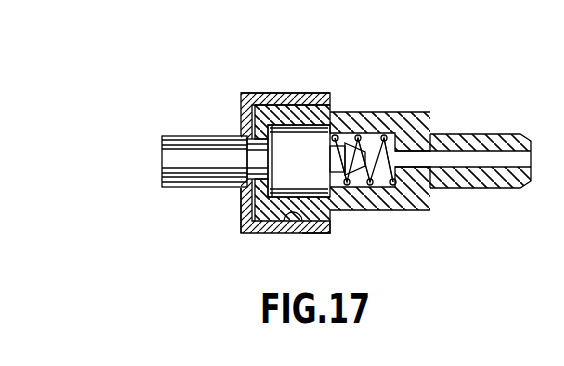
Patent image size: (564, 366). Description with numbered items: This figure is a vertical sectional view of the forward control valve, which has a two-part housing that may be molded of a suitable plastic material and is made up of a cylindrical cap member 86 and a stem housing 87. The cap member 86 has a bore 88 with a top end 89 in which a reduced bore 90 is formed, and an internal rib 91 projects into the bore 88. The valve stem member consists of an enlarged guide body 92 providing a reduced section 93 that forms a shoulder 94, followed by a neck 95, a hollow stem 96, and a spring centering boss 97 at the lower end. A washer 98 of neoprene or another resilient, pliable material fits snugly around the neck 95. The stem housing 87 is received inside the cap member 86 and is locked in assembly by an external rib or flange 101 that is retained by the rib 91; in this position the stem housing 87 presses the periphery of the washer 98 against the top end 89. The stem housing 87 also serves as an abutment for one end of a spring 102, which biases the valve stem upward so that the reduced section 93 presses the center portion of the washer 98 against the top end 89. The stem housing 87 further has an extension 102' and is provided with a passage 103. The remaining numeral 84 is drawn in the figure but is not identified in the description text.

The coupling body 84 is at (278, 93).
The cap member 86 is at (292, 95).
The stem housing 87 is at (405, 112).
The bore 88 is at (293, 222).
The top end 89 is at (240, 212).
The reduced bore 90 is at (239, 108).
The internal rib 91 is at (317, 233).
The enlarged guide body 92 is at (322, 128).
The reduced section 93 is at (212, 188).
The shoulder 94 is at (270, 158).
The neck 95 is at (257, 157).
The hollow stem 96 is at (175, 190).
The spring centering boss 97 is at (353, 176).
The washer 98 is at (257, 95).
The external rib or flange 101 is at (298, 110).
The spring 102 is at (385, 112).
The extension 102' is at (485, 136).
The passage 103 is at (493, 172).